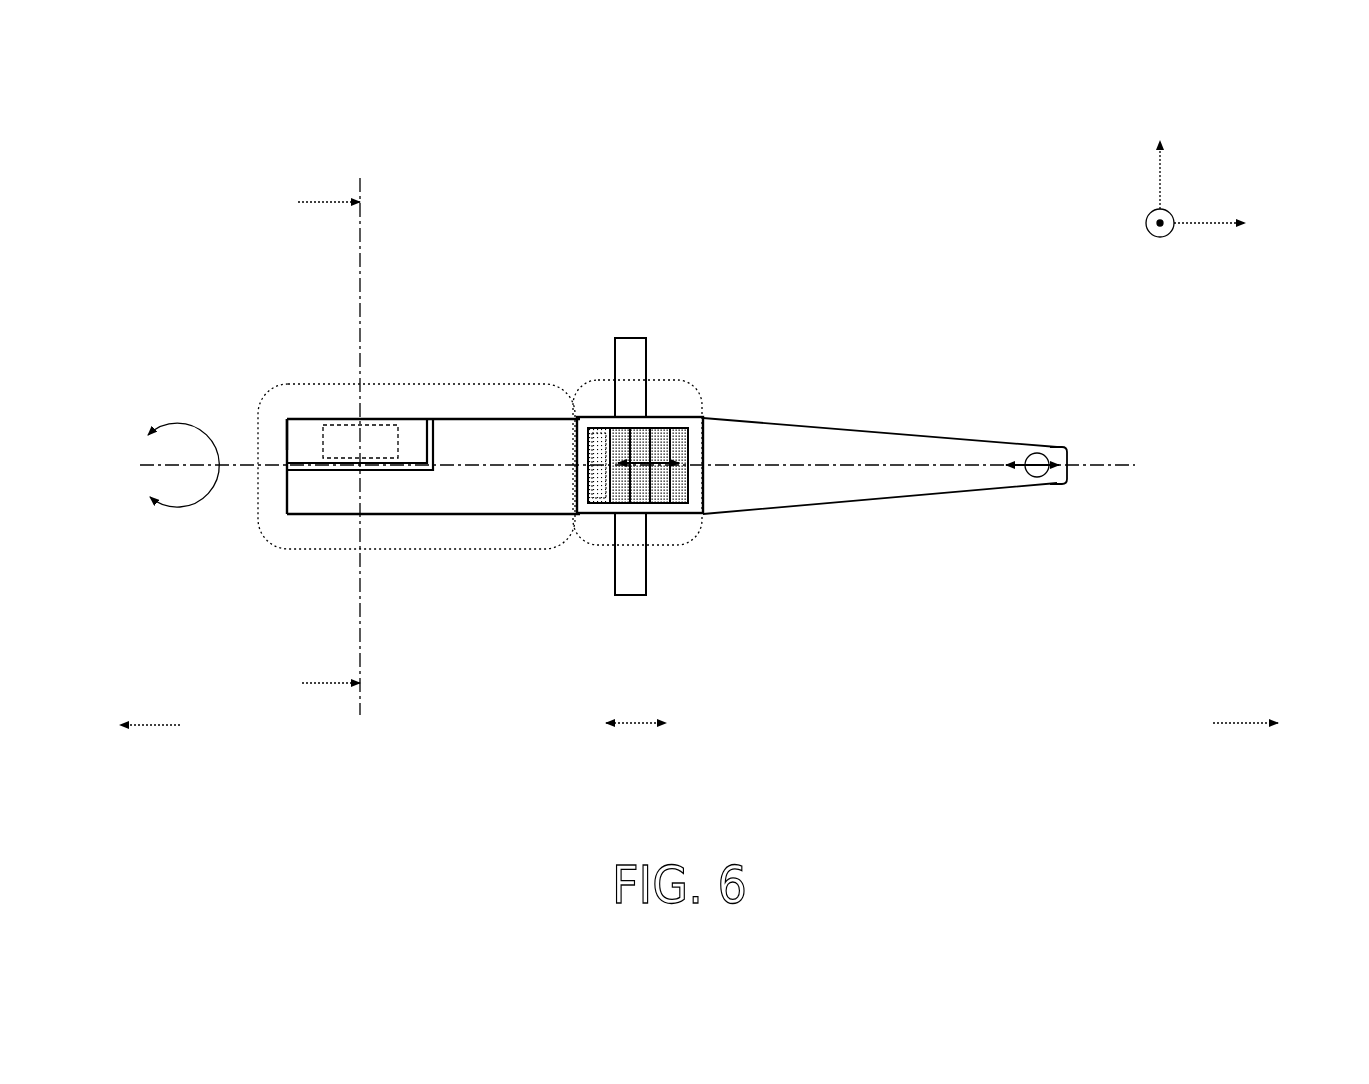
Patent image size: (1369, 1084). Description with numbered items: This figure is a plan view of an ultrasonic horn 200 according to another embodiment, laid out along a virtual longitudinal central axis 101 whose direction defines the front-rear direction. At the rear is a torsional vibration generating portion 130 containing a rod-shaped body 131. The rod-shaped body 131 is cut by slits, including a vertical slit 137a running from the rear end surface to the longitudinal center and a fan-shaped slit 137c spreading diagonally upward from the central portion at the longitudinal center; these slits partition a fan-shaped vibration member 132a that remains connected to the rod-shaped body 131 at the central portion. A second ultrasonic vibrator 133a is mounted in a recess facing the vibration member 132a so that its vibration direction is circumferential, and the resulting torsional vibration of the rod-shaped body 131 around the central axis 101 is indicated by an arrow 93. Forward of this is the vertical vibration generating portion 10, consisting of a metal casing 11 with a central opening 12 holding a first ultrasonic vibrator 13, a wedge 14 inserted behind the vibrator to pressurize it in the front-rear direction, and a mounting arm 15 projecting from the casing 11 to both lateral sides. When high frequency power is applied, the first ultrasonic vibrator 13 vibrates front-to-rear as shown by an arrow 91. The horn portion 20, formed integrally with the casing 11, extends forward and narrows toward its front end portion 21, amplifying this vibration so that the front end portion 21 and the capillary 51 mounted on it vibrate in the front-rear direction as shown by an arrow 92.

The ultrasonic horn 200 is at (190, 178).
The arrow 93 is at (163, 418).
The longitudinal central axis 101 is at (248, 462).
The torsional vibration generating portion 130 is at (463, 383).
The rod-shaped body 131 is at (525, 418).
The vibration member 132a is at (297, 417).
The second ultrasonic vibrator 133a is at (343, 425).
The fan-shaped slit 137c is at (432, 418).
The vertical slit 137a is at (287, 467).
The vertical vibration generating portion 10 is at (672, 377).
The mounting arm 15 is at (615, 337).
The casing 11 is at (687, 417).
The opening 12 is at (693, 445).
The first ultrasonic vibrator 13 is at (678, 490).
The wedge 14 is at (603, 485).
The arrow 91 is at (662, 470).
The horn portion 20 is at (855, 427).
The front end portion 21 is at (1057, 447).
The capillary 51 is at (1042, 472).
The arrow 92 is at (1005, 468).